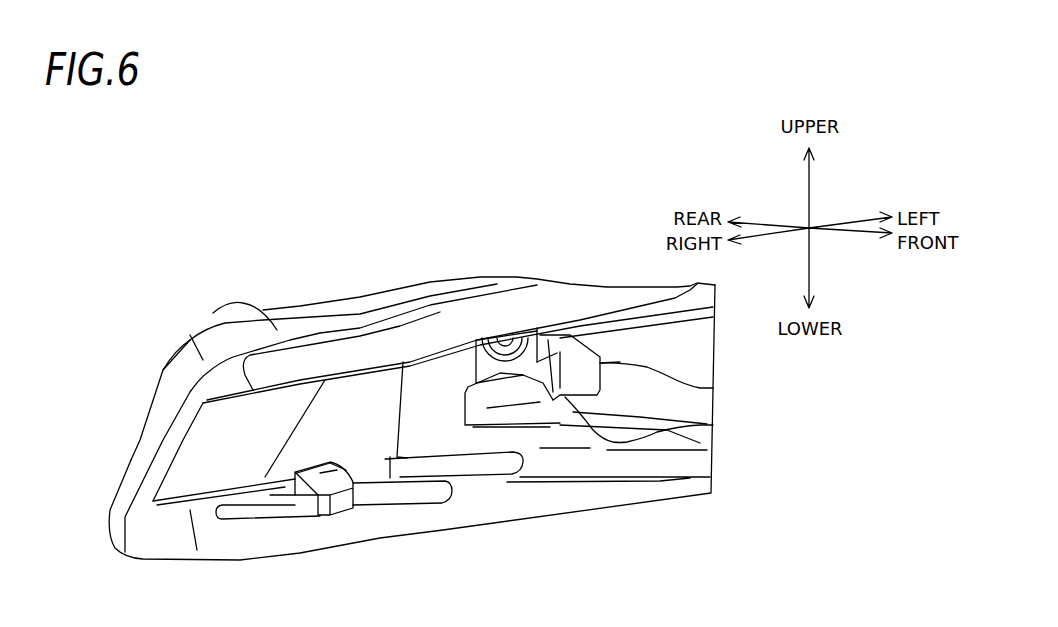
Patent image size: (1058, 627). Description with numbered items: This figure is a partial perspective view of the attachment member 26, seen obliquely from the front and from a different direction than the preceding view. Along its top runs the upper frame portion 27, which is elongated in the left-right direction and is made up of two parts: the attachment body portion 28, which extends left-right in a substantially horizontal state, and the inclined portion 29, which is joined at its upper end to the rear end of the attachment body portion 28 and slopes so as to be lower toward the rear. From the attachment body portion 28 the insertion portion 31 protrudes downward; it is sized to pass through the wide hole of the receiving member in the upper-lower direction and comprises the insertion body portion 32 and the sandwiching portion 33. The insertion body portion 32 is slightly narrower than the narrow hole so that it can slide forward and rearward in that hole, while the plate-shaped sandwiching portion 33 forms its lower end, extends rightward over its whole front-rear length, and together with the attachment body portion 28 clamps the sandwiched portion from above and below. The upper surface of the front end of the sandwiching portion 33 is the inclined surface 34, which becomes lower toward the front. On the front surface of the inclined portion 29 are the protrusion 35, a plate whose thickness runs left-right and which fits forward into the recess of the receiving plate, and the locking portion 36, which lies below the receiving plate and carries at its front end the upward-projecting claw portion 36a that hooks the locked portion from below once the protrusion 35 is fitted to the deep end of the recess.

The attachment member 26 is at (532, 261).
The upper frame portion 27 is at (125, 303).
The attachment body portion 28 is at (203, 318).
The inclined portion 29 is at (182, 418).
The insertion portion 31 is at (766, 372).
The insertion body portion 32 is at (702, 388).
The sandwiching portion 33 is at (706, 430).
The inclined surface 34 is at (468, 405).
The protrusion 35 is at (368, 505).
The locking portion 36 is at (268, 522).
The claw portion 36a is at (327, 464).